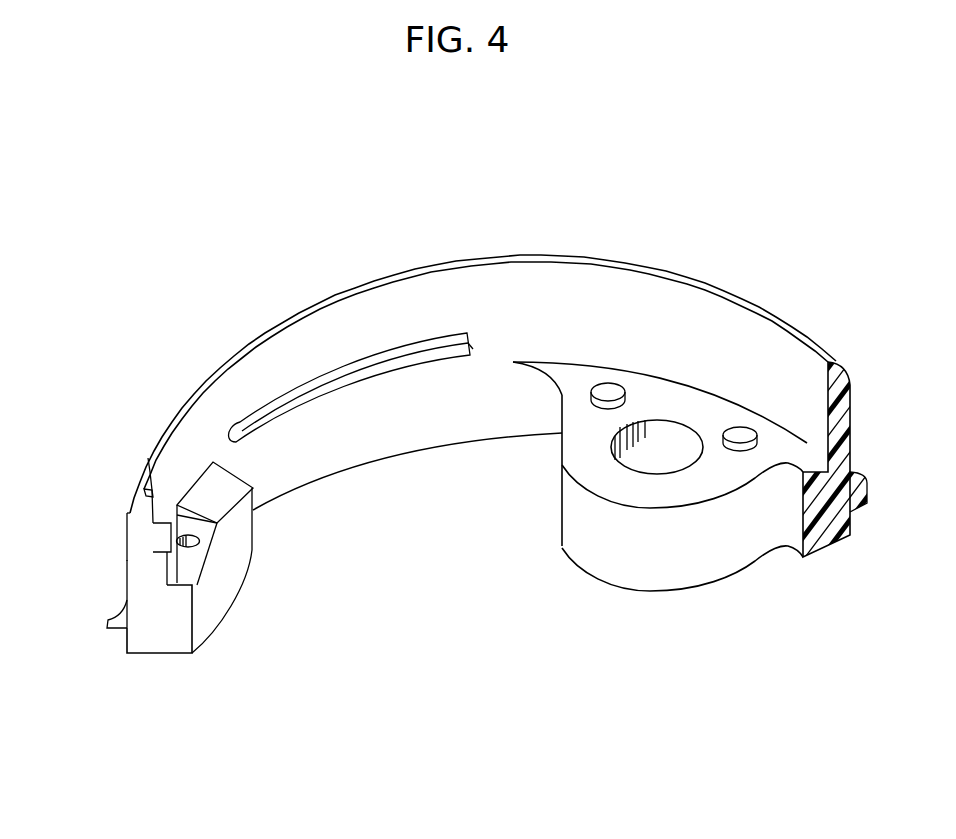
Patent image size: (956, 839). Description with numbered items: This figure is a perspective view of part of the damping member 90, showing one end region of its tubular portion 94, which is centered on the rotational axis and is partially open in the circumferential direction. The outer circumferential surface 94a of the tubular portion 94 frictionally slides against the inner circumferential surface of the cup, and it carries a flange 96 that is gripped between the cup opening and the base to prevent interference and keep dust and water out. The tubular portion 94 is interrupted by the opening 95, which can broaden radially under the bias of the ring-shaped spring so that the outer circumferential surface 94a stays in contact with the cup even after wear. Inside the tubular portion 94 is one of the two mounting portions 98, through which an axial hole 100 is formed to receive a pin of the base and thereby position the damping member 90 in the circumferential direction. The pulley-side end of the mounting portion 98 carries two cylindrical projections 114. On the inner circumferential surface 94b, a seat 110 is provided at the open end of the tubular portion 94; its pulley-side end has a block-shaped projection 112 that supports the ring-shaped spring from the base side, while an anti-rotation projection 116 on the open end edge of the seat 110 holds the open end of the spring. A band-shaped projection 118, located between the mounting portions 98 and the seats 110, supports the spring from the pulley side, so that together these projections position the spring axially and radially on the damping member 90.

The damping member 90 is at (678, 273).
The tubular portion 94 is at (137, 514).
The outer circumferential surface 94a is at (127, 568).
The inner circumferential surface 94b is at (592, 314).
The opening 95 is at (170, 623).
The flange 96 is at (117, 626).
The mounting portion 98 is at (601, 475).
The hole 100 is at (663, 447).
The seat 110 is at (218, 566).
The block-shaped projection 112 is at (207, 482).
The cylindrical projection 114 is at (591, 393).
The anti-rotation projection 116 is at (160, 527).
The band-shaped projection 118 is at (334, 370).